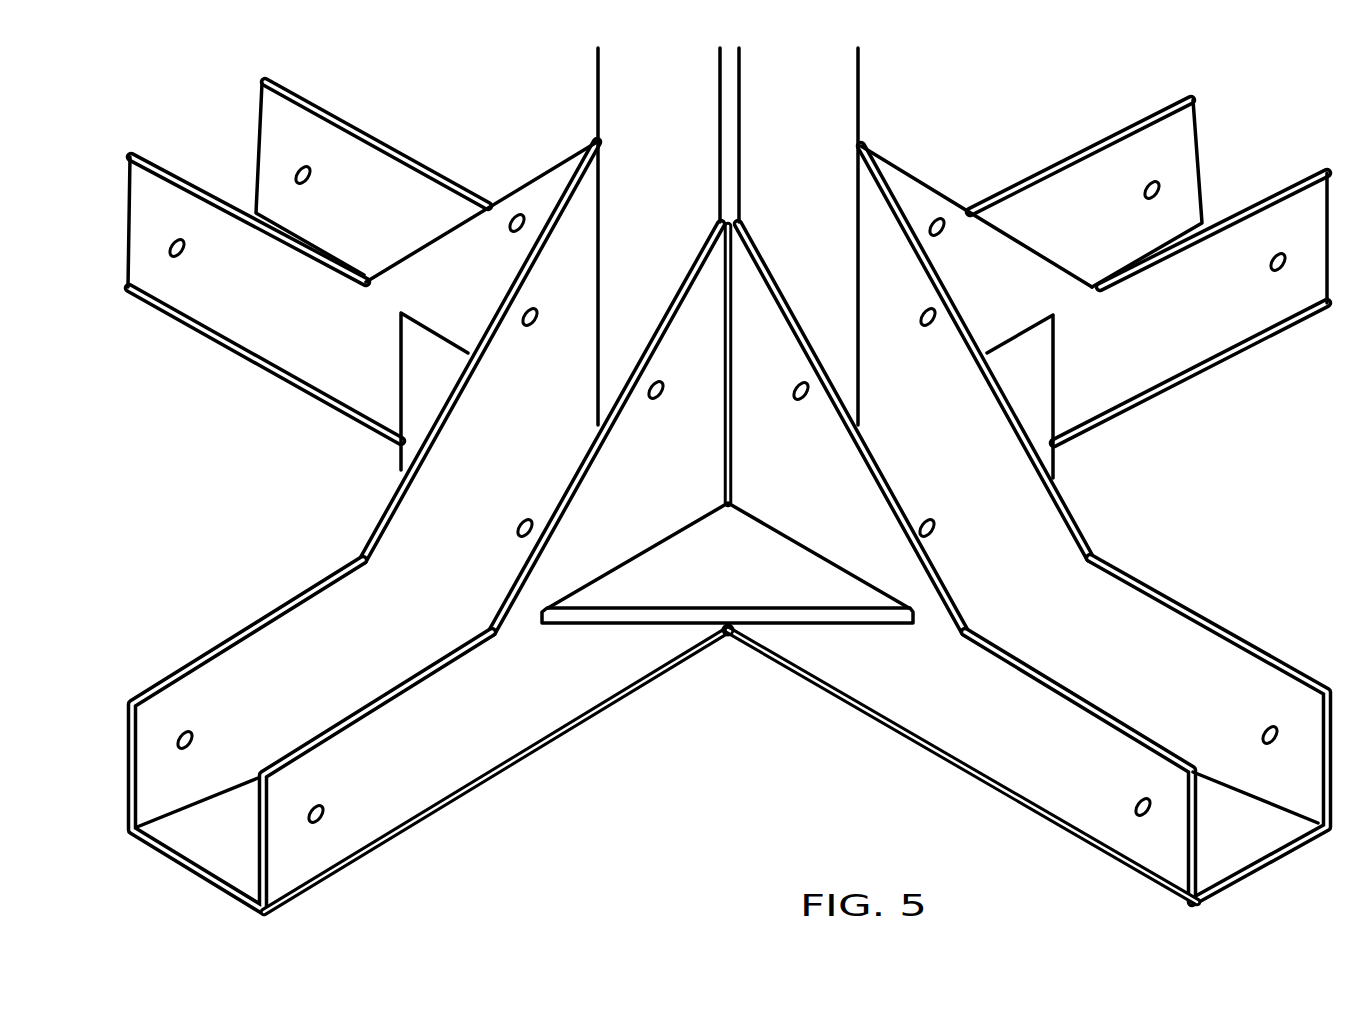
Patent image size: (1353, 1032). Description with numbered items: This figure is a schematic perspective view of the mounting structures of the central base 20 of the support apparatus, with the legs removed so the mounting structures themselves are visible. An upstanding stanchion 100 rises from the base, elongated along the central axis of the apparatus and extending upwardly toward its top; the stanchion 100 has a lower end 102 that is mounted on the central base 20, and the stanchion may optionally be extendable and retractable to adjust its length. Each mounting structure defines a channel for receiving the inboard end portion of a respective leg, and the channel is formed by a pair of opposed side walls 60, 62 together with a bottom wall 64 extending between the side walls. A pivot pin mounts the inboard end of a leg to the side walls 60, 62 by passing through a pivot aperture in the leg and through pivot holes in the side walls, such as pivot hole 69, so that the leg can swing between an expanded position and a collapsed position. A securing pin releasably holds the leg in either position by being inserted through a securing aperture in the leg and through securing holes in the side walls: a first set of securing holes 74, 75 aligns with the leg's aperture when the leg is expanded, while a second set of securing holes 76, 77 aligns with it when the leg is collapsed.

The central base 20 is at (1213, 68).
The side wall 60 is at (237, 663).
The side wall 62 is at (402, 780).
The bottom wall 64 is at (227, 855).
The pivot hole 69 is at (520, 521).
The securing hole of first set 74 is at (184, 725).
The securing hole of first set 75 is at (318, 826).
The securing hole of second set 76 is at (800, 400).
The securing hole of second set 77 is at (918, 300).
The stanchion 100 is at (861, 70).
The lower end 102 is at (667, 215).